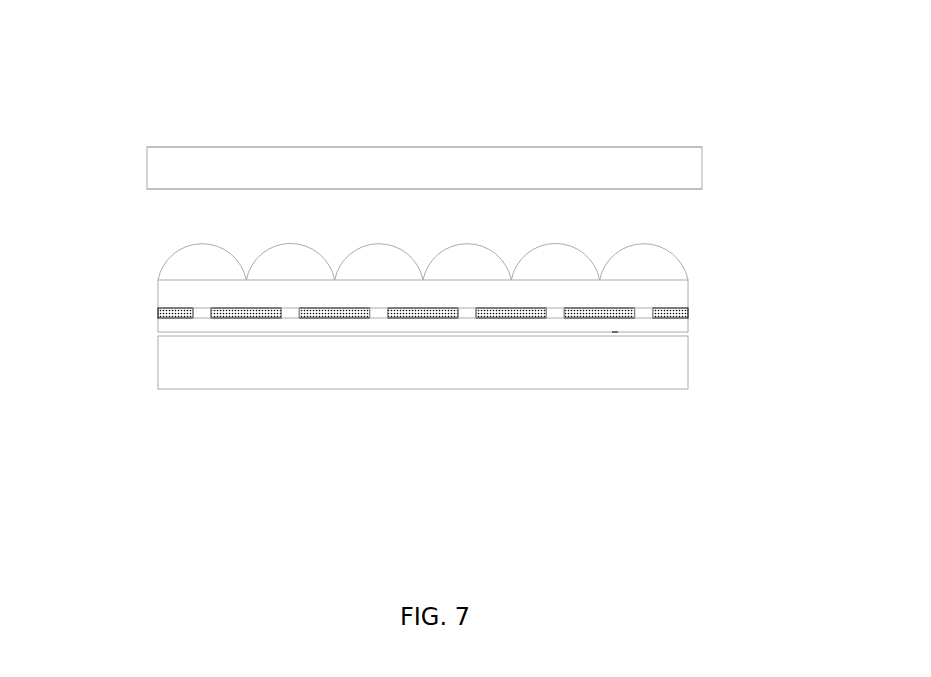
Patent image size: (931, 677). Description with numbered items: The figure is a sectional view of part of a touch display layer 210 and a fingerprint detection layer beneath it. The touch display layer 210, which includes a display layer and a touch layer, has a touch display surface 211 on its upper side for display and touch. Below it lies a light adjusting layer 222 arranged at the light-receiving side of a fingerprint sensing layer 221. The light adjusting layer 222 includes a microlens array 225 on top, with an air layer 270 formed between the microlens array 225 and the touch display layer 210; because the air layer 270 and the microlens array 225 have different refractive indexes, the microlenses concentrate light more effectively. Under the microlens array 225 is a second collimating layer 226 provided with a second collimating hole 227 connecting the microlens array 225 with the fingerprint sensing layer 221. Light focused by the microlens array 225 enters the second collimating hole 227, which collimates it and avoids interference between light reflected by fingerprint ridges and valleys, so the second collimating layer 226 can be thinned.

The touch display layer 210 is at (403, 163).
The touch display surface 211 is at (530, 148).
The air layer 270 is at (264, 197).
The light adjusting layer 222 is at (434, 267).
The microlens array 225 is at (178, 265).
The second collimating layer 226 is at (688, 307).
The second collimating hole 227 is at (648, 310).
The fingerprint sensing layer 221 is at (387, 373).